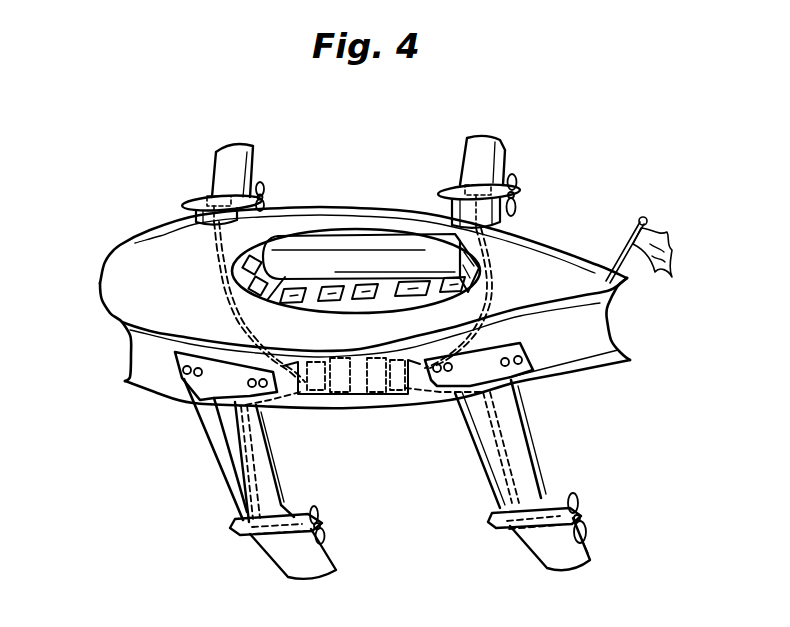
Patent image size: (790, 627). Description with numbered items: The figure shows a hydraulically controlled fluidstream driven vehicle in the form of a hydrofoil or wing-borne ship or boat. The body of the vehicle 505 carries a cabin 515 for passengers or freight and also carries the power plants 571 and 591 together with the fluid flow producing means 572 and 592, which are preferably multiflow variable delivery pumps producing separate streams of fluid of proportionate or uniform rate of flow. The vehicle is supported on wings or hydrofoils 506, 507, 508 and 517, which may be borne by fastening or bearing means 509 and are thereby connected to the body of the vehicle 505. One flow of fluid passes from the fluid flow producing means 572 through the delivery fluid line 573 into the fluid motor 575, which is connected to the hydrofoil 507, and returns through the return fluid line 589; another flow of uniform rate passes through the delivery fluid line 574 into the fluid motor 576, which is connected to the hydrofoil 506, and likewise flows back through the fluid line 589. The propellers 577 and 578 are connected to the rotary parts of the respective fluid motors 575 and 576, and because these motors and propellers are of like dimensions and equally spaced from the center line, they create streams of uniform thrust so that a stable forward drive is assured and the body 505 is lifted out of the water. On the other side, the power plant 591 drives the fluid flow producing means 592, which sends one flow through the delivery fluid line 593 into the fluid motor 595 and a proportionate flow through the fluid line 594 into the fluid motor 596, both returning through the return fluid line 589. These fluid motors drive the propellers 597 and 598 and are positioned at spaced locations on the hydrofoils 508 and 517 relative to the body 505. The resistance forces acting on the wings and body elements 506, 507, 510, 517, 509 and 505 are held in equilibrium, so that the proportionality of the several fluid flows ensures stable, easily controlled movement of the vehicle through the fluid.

The body of the vehicle 505 is at (123, 251).
The wing or hydrofoil 506 is at (205, 428).
The wing or hydrofoil 507 is at (225, 158).
The wing or hydrofoil 508 is at (477, 447).
The fastening or bearing means 509 is at (245, 478).
The wing or body element 510 is at (503, 493).
The cabin 515 is at (280, 265).
The wing or hydrofoil 517 is at (475, 152).
The power plant 571 is at (340, 384).
The fluid flow producing means 572 is at (312, 380).
The delivery fluid line 573 is at (217, 253).
The delivery fluid line 574 is at (245, 454).
The fluid motor 575 is at (218, 200).
The fluid motor 576 is at (272, 553).
The rotary member or propeller 577 is at (267, 195).
The rotary member or propeller 578 is at (327, 539).
The return fluid line 589 is at (222, 280).
The power plant 591 is at (375, 382).
The fluid flow producing means 592 is at (400, 382).
The delivery fluid line 593 is at (487, 292).
The fluid line 594 is at (503, 468).
The fluid motor 595 is at (477, 190).
The fluid motor 596 is at (533, 538).
The revolving member or propeller 597 is at (520, 183).
The revolving member or propeller 598 is at (590, 529).